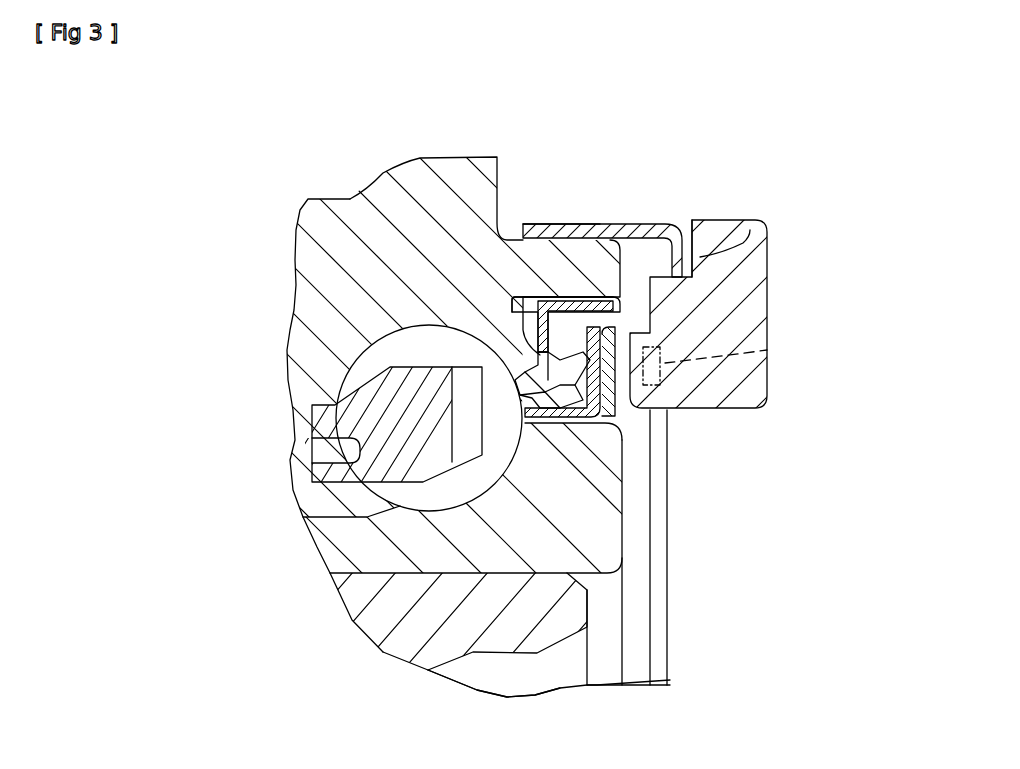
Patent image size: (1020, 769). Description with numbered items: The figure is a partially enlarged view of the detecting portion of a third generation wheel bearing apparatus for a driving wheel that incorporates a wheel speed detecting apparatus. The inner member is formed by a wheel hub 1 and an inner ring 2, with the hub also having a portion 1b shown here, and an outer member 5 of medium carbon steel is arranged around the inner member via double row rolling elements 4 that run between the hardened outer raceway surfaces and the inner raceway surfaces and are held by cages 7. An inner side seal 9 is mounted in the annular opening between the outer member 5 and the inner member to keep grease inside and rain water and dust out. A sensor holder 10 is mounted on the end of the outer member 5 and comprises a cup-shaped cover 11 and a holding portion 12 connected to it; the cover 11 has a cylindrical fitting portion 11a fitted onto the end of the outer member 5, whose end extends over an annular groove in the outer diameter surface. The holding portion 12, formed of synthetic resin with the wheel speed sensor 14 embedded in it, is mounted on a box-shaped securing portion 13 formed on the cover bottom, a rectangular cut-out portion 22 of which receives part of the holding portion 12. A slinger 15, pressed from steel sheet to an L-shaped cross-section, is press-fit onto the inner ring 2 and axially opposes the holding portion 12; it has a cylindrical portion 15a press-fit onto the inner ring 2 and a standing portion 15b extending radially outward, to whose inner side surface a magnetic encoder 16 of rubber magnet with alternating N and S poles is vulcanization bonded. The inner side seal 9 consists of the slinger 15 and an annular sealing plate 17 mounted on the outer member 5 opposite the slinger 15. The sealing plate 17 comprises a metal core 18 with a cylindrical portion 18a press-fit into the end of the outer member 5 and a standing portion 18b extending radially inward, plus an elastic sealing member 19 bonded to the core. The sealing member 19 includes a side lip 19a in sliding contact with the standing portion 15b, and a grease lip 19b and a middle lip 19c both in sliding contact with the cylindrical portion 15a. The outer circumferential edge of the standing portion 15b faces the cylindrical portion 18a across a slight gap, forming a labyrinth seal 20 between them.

The wheel hub 1 is at (390, 614).
The housing flange portion 1b is at (523, 542).
The inner ring 2 is at (367, 545).
The rolling elements (balls) 4 is at (413, 500).
The outer member 5 is at (387, 210).
The cage 7 is at (345, 443).
The inner side seal 9 is at (587, 297).
The sensor holder 10 is at (762, 197).
The cup-shaped cover 11 is at (621, 224).
The cylindrical fitting portion 11a is at (561, 232).
The holding portion 12 is at (765, 241).
The securing portion 13 is at (700, 255).
The wheel speed sensor 14 is at (766, 356).
The slinger 15 is at (710, 547).
The cylindrical portion 15a is at (625, 527).
The standing portion 15b is at (652, 488).
The magnetic encoder 16 is at (668, 438).
The annular sealing plate 17 is at (381, 337).
The metal core 18 is at (381, 312).
The cylindrical portion 18a is at (565, 301).
The standing portion 18b is at (542, 330).
The sealing member 19 is at (419, 380).
The side lip 19a is at (538, 352).
The grease lip 19b is at (535, 403).
The middle lip 19c is at (520, 378).
The labyrinth seal 20 is at (600, 320).
The cut-out portion 22 is at (712, 303).